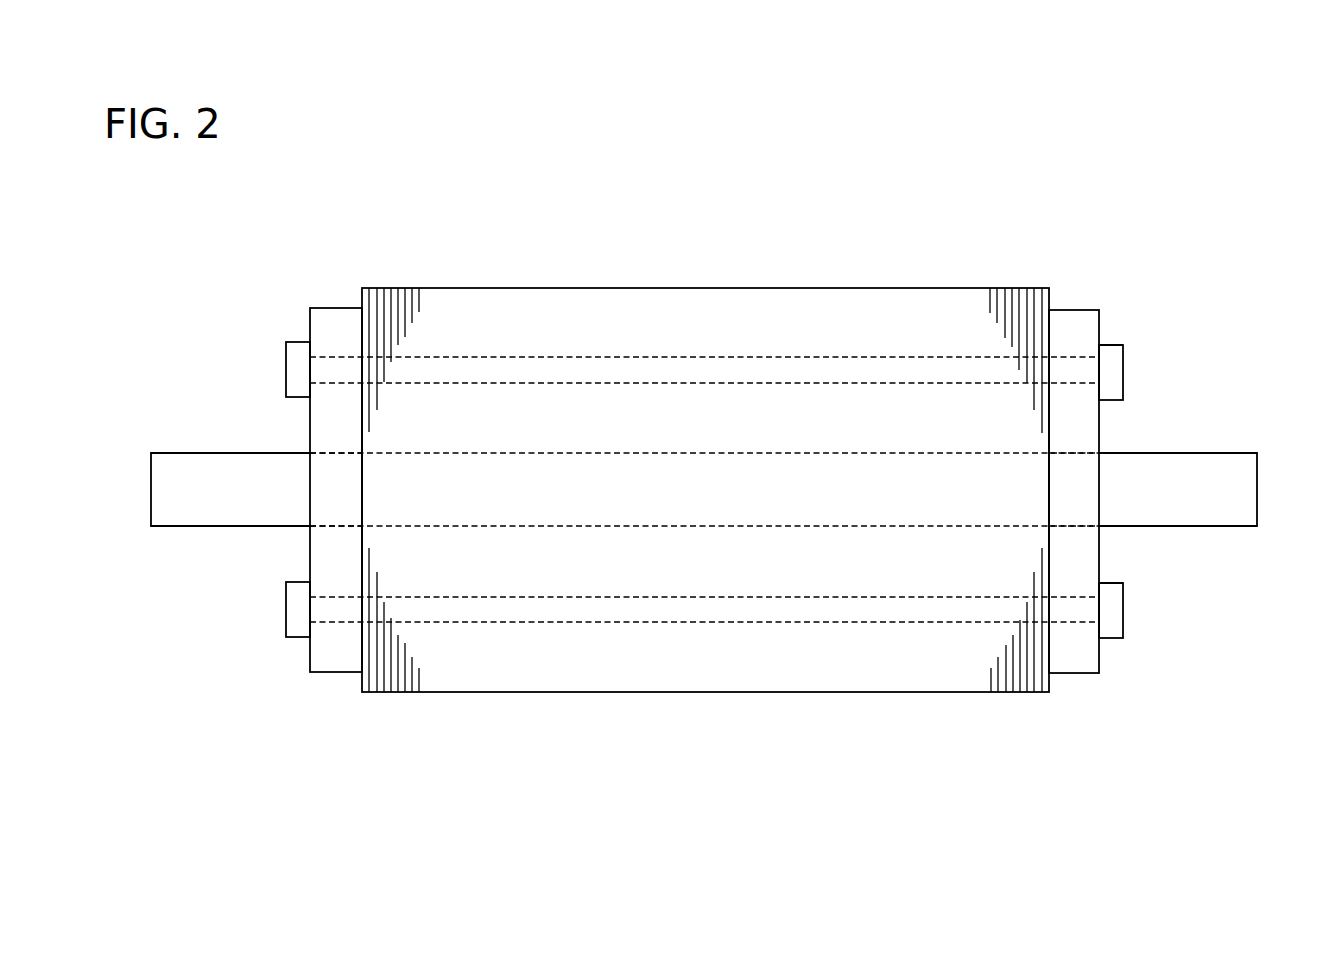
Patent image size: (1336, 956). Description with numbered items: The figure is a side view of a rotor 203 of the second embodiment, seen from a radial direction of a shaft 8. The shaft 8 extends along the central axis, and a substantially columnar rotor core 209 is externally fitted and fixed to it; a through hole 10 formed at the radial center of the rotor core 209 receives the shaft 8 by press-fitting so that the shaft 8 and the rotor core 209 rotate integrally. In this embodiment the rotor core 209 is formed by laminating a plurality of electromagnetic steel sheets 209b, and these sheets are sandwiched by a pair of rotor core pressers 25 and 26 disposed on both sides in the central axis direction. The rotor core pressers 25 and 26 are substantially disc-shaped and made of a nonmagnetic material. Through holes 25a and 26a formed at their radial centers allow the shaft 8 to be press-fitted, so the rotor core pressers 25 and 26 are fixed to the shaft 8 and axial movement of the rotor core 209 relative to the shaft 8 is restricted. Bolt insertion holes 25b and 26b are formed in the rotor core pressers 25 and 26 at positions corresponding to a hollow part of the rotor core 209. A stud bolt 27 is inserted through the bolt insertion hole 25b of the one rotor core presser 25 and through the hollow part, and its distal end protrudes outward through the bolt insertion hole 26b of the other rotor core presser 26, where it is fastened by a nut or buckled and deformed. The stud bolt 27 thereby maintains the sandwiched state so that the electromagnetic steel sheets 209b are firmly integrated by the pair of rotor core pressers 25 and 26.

The rotor 203 is at (1047, 237).
The rotor core 209 is at (764, 288).
The electromagnetic steel sheets 209b is at (386, 288).
The rotor core presser 26 is at (338, 308).
The through hole 26a is at (337, 456).
The bolt insertion hole 26b is at (335, 360).
The rotor core presser 25 is at (1099, 328).
The through hole 25a is at (1074, 456).
The bolt insertion hole 25b is at (1076, 360).
The stud bolt 27 is at (1123, 382).
The shaft 8 is at (1257, 490).
The through hole 10 is at (540, 526).